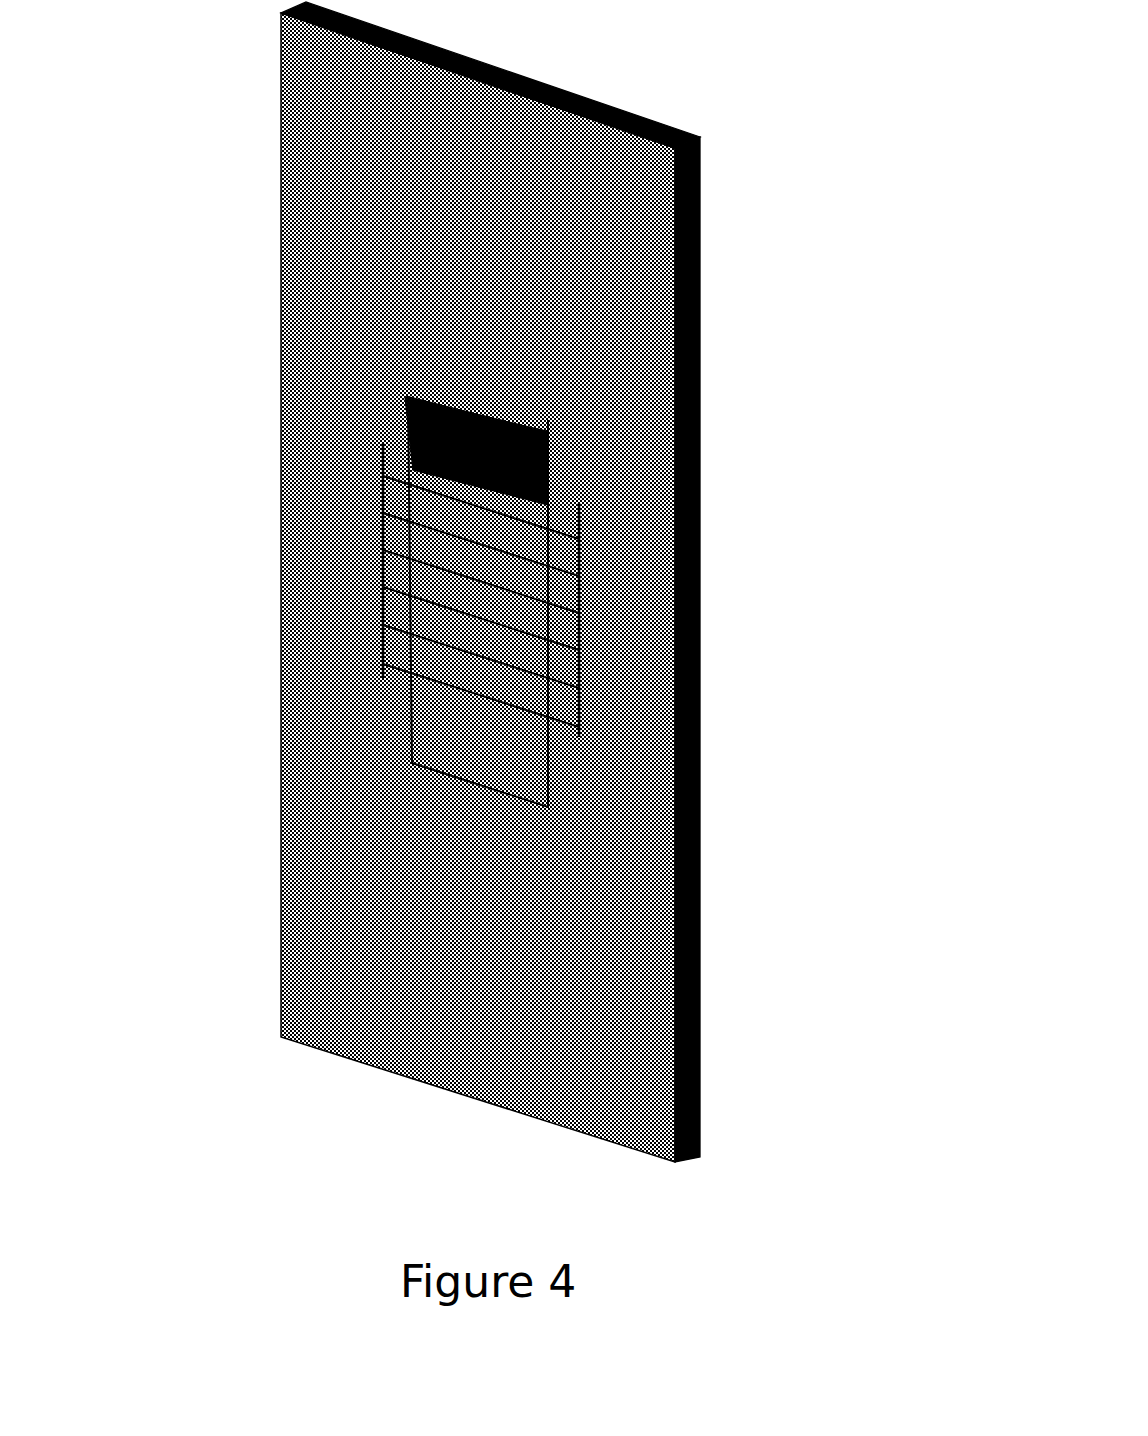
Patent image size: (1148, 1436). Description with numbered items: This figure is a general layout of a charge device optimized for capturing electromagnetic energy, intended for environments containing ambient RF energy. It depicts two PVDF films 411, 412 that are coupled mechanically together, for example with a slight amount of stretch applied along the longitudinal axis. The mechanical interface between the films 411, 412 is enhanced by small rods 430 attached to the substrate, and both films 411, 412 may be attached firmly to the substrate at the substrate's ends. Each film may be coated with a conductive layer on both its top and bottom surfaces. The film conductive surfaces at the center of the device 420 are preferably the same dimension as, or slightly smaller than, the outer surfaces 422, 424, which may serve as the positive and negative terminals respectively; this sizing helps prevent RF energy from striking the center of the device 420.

The PVDF film 411 is at (406, 395).
The PVDF film 412 is at (721, 320).
The center of the device 420 is at (603, 582).
The outer surface 422 is at (462, 412).
The outer surface 424 is at (645, 224).
The small rods 430 is at (383, 664).